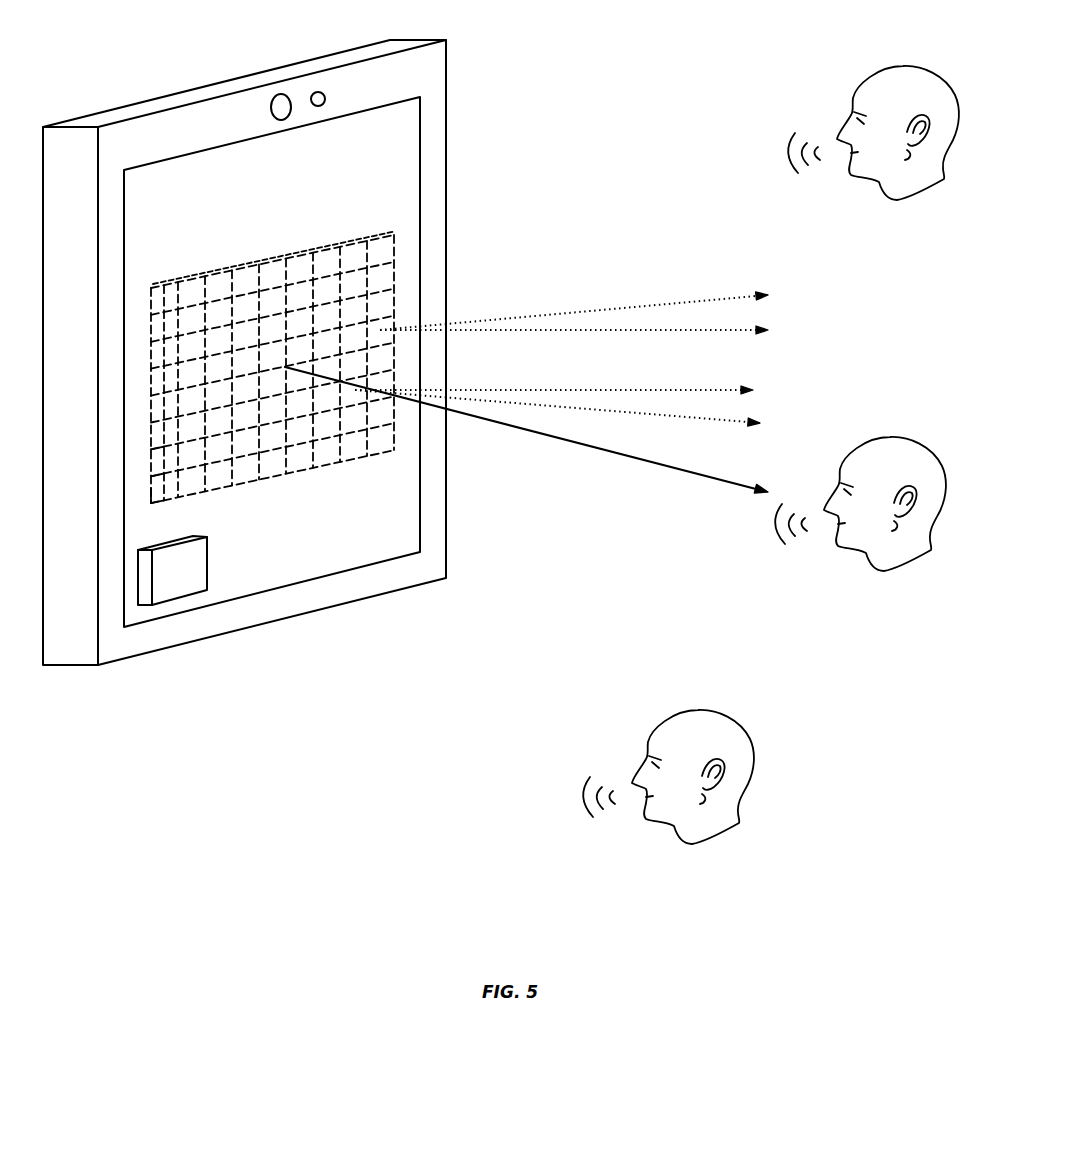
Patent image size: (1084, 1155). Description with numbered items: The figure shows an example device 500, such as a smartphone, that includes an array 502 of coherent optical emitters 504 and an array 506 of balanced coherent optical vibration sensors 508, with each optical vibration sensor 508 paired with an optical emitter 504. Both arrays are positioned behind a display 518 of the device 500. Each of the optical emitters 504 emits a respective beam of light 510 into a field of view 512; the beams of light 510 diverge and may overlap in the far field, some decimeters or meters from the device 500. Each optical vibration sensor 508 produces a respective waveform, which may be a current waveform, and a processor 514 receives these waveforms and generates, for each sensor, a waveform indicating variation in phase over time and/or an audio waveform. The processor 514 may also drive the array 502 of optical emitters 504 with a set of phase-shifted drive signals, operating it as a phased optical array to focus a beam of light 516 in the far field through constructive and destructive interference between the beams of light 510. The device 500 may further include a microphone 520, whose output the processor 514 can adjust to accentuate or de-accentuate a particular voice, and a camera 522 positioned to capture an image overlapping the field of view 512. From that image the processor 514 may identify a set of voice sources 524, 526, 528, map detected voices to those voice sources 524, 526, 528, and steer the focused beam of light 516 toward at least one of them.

The device 500 is at (168, 95).
The array of coherent optical emitters 502 is at (150, 376).
The coherent optical emitter 504 is at (150, 487).
The array of balanced coherent optical vibration sensors 506 is at (160, 405).
The balanced coherent optical vibration sensor 508 is at (163, 456).
The beam of light 510 is at (507, 318).
The field of view 512 is at (820, 364).
The processor 514 is at (138, 577).
The focused beam of light 516 is at (666, 468).
The display 518 is at (421, 163).
The microphone 520 is at (318, 92).
The camera 522 is at (281, 94).
The voice source 524 is at (903, 64).
The voice source 526 is at (890, 435).
The voice source 528 is at (698, 708).